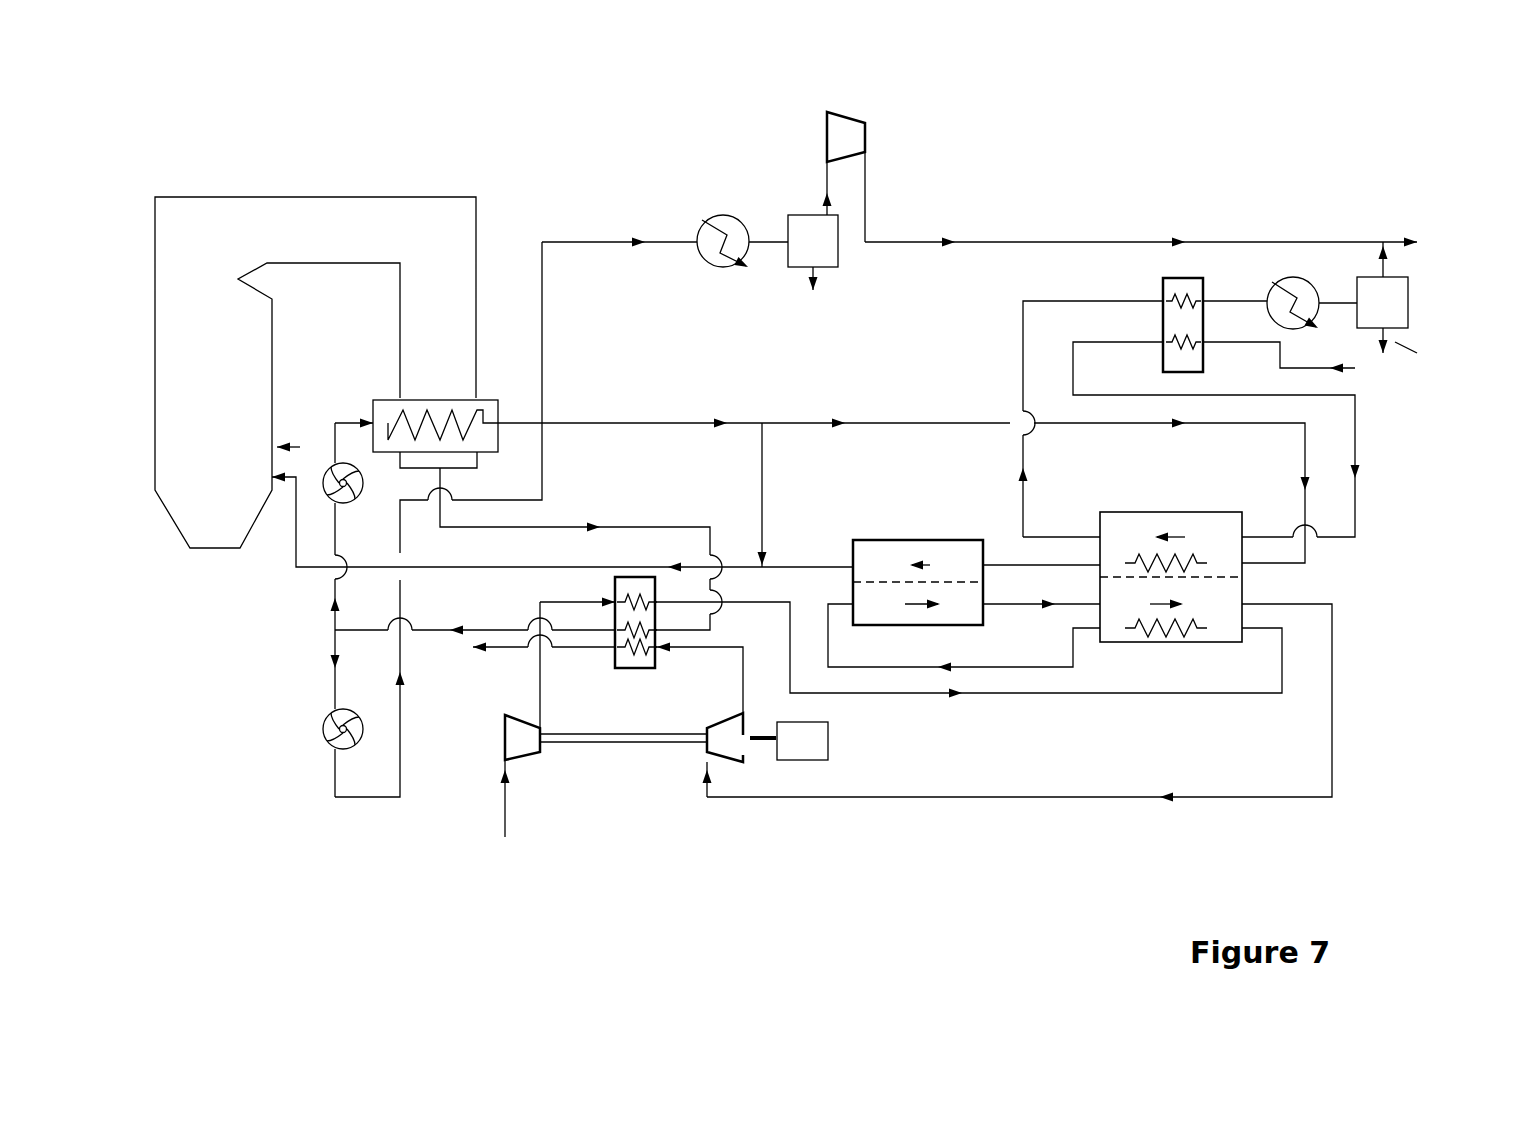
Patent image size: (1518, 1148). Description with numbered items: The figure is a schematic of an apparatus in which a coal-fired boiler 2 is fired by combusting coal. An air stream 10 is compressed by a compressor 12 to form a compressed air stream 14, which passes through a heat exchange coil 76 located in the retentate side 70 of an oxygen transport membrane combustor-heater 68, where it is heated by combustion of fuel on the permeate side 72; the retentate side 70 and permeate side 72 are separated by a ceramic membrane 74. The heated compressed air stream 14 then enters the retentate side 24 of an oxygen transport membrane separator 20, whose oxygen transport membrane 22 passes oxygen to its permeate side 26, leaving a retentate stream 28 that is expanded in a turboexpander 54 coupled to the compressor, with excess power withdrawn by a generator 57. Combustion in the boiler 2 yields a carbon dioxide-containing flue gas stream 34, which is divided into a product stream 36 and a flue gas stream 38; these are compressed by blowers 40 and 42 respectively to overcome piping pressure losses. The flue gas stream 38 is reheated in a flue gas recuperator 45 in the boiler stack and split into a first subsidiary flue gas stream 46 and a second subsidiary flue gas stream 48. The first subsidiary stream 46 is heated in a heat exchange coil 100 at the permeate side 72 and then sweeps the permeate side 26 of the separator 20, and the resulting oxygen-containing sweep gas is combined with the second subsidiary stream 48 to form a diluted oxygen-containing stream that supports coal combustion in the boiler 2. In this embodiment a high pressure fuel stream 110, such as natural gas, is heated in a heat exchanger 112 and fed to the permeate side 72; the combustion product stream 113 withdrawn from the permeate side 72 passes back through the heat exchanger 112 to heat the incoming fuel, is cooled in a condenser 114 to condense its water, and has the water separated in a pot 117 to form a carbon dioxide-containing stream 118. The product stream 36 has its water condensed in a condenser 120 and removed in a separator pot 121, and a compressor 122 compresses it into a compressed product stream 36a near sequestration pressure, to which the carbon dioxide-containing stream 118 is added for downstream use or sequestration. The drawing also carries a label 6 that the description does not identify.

The boiler 2 is at (296, 217).
The heat exchanger assembly 6 is at (1261, 443).
The air stream 10 is at (508, 823).
The compressor 12 is at (517, 747).
The compressed air stream 14 is at (617, 657).
The oxygen transport membrane separator 20 is at (932, 569).
The oxygen transport membrane 22 is at (933, 579).
The retentate side 24 is at (955, 617).
The permeate side 26 is at (880, 553).
The retentate stream 28 is at (957, 798).
The stream 34 is at (633, 525).
The product stream 36 is at (643, 238).
The compressed product stream 36a is at (1020, 238).
The flue gas stream 38 is at (353, 420).
The blower 40 is at (323, 725).
The blower 42 is at (350, 501).
The flue gas recuperator 45 is at (490, 398).
The first subsidiary flue gas stream 46 is at (815, 420).
The second subsidiary flue gas stream 48 is at (762, 474).
The turboexpander 54 is at (725, 735).
The generator 57 is at (802, 748).
The oxygen transport membrane combustor-heater 68 is at (1170, 565).
The retentate side 70 is at (1137, 603).
The permeate side 72 is at (1190, 525).
The ceramic membrane 74 is at (1178, 583).
The heat exchange coil 76 is at (1190, 630).
The heat exchange coil 100 is at (1150, 553).
The high pressure fuel stream 110 is at (1347, 368).
The heat exchanger 112 is at (1160, 291).
The combustion product stream 113 is at (1020, 383).
The condenser 114 is at (1280, 278).
The pot 117 is at (1397, 290).
The carbon dioxide-containing stream 118 is at (1387, 265).
The condenser 120 is at (723, 215).
The separator pot 121 is at (813, 242).
The compressor 122 is at (840, 137).